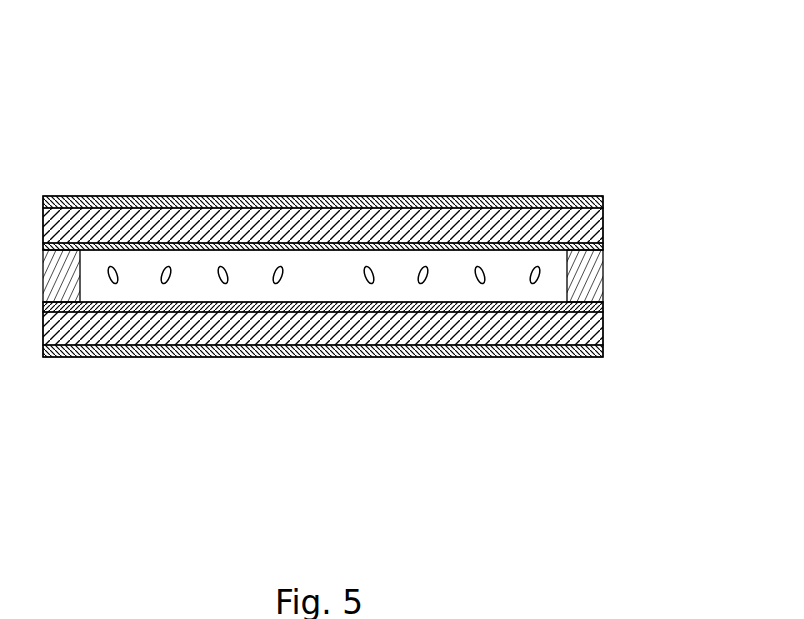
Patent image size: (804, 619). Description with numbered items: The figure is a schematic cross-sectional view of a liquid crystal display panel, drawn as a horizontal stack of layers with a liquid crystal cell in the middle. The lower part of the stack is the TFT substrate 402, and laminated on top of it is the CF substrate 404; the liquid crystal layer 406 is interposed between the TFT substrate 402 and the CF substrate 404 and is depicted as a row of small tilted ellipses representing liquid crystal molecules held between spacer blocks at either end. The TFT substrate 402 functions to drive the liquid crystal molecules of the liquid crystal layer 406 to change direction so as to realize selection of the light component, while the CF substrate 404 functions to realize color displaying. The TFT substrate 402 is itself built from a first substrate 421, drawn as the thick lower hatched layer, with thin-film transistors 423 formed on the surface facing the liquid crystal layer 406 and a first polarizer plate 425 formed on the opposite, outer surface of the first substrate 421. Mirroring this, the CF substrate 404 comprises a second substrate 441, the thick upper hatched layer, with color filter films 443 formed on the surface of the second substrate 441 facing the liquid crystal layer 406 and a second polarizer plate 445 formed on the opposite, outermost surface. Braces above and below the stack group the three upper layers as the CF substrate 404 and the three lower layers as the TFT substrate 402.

The TFT substrate 402 is at (430, 457).
The CF substrate 404 is at (430, 85).
The liquid crystal layer 406 is at (540, 274).
The first substrate 421 is at (245, 333).
The thin-film transistors 423 is at (370, 305).
The first polarizer plate 425 is at (112, 357).
The second substrate 441 is at (245, 217).
The color filter films 443 is at (370, 242).
The second polarizer plate 445 is at (112, 197).